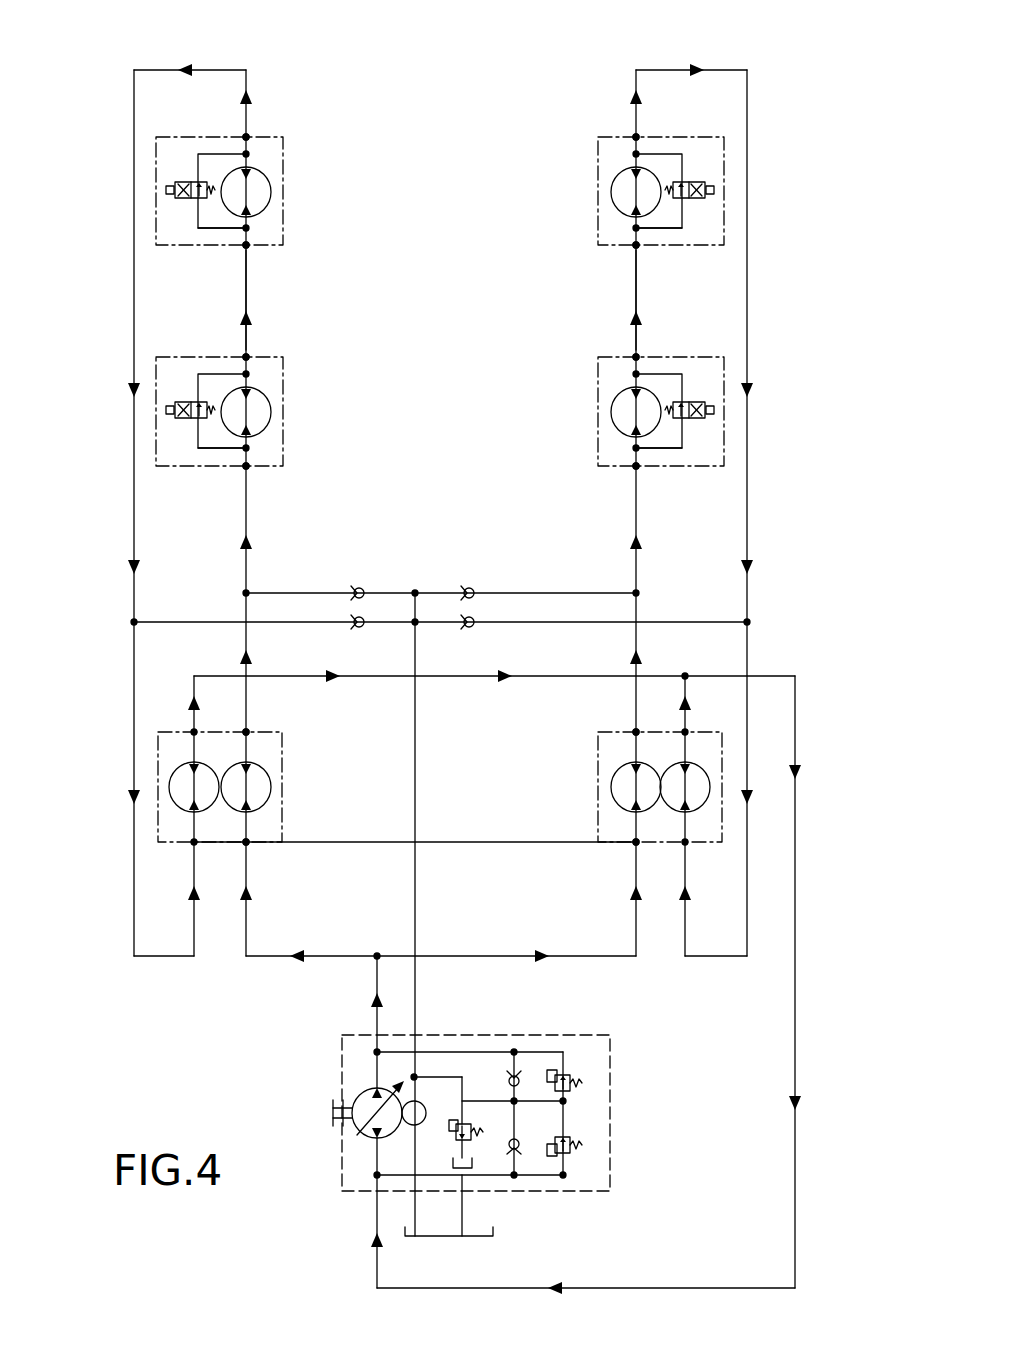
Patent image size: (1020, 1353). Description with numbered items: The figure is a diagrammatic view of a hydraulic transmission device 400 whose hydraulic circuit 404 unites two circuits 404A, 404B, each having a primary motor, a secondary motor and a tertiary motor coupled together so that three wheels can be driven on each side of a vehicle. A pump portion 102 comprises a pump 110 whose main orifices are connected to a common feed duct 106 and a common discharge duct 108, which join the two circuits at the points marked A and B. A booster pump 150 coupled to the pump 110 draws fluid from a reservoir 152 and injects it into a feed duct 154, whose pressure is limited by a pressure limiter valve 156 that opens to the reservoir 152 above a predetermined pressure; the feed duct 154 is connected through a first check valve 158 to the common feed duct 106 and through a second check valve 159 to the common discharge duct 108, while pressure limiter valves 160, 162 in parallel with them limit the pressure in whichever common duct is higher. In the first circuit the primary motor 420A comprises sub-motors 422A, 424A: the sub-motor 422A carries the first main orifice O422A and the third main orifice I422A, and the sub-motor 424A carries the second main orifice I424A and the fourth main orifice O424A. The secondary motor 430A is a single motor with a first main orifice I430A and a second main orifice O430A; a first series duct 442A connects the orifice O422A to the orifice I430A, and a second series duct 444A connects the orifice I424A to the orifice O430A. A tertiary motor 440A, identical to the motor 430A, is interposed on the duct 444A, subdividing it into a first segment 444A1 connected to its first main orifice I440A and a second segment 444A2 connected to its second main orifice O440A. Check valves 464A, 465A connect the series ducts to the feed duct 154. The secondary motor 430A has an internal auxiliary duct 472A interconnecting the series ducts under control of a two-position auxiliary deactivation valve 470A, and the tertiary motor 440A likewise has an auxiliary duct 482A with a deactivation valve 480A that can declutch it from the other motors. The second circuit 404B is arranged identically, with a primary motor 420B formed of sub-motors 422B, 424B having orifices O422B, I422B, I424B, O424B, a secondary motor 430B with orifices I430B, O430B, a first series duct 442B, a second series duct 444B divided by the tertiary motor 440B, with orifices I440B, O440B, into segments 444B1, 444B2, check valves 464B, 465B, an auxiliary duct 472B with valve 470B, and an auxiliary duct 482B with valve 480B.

The hydraulic transmission device 400 is at (144, 1070).
The hydraulic circuit 404 is at (119, 892).
The hydraulic circuit 404A is at (338, 56).
The hydraulic circuit 404B is at (558, 62).
The pump portion 102 is at (352, 1266).
The common feed duct 106 is at (375, 1022).
The common discharge duct 108 is at (677, 1287).
The pump 110 is at (356, 1130).
The booster pump 150 is at (414, 1100).
The reservoir 152 is at (418, 1236).
The feed duct 154 is at (416, 984).
The pressure limiter valve 156 is at (472, 1140).
The first check valve 158 is at (514, 1076).
The second check valve 159 is at (522, 1154).
The pressure limiter valve 160 is at (570, 1080).
The pressure limiter valve 162 is at (570, 1150).
The node A of main line A is at (378, 959).
The node B of main line B is at (686, 674).
The primary motor 420A is at (150, 764).
The primary motor 420B is at (594, 764).
The sub-motor 422A is at (270, 788).
The sub-motor 422B is at (610, 788).
The sub-motor 424A is at (172, 796).
The sub-motor 424B is at (702, 798).
The first main orifice O422A is at (248, 733).
The fourth main orifice O424A is at (192, 733).
The third main orifice I422A is at (246, 844).
The second main orifice I424A is at (194, 844).
The first main orifice O422B is at (636, 733).
The fourth main orifice O424B is at (686, 733).
The third main orifice I422B is at (636, 844).
The second main orifice I424B is at (685, 844).
The secondary motor 430A is at (301, 378).
The secondary motor 430B is at (582, 378).
The second main orifice O430A is at (248, 357).
The first main orifice I430A is at (247, 466).
The second main orifice O430B is at (634, 357).
The first main orifice I430B is at (635, 466).
The tertiary motor 440A is at (301, 158).
The tertiary motor 440B is at (582, 158).
The second main orifice O440A is at (248, 137).
The first main orifice I440A is at (247, 246).
The second main orifice O440B is at (634, 137).
The first main orifice I440B is at (635, 246).
The first series duct 442A is at (248, 525).
The first series duct 442B is at (634, 525).
The second series duct 444A is at (136, 525).
The second series duct 444B is at (747, 525).
The first segment 444A1 is at (248, 300).
The first segment 444B1 is at (634, 300).
The second segment 444A2 is at (170, 70).
The second segment 444B2 is at (718, 50).
The check valve 464A is at (358, 589).
The check valve 464B is at (468, 589).
The check valve 465A is at (358, 628).
The check valve 465B is at (468, 628).
The auxiliary deactivation valve 470A is at (190, 402).
The auxiliary deactivation valve 470B is at (690, 402).
The internal auxiliary duct 472A is at (230, 450).
The internal auxiliary duct 472B is at (650, 450).
The auxiliary deactivation valve 480A is at (190, 182).
The auxiliary deactivation valve 480B is at (690, 182).
The auxiliary duct 482A is at (230, 230).
The auxiliary duct 482B is at (650, 230).